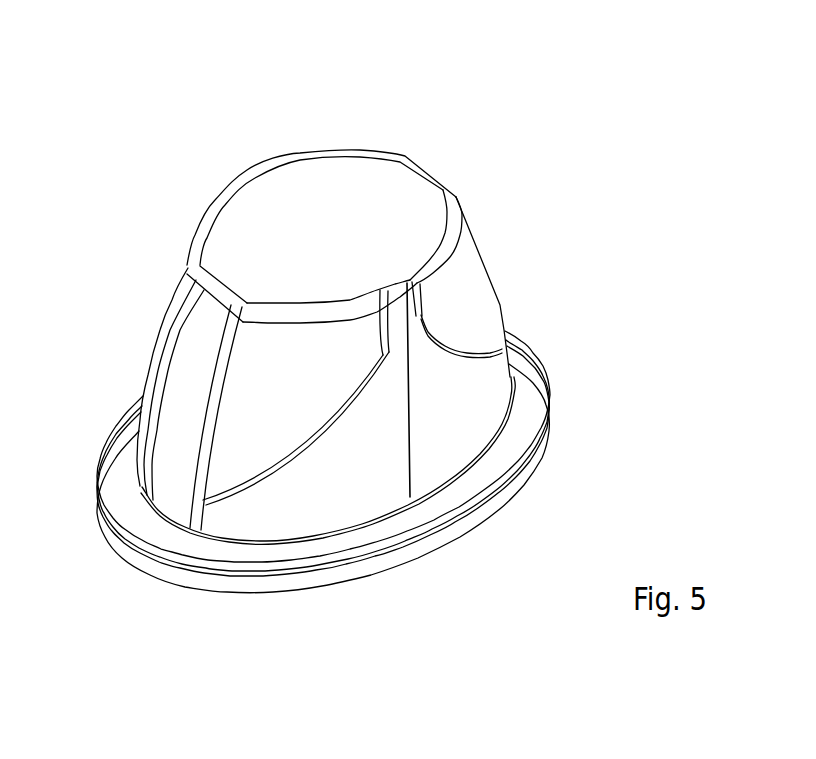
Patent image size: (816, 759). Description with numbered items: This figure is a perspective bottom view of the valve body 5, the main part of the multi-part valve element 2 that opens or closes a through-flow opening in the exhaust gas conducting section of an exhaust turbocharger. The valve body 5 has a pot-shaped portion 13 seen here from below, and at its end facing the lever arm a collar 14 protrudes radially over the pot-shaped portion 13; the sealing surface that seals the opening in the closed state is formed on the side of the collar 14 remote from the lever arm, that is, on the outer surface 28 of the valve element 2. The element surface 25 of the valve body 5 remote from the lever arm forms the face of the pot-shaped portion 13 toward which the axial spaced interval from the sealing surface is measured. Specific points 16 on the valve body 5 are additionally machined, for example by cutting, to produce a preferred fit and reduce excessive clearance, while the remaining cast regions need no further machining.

The valve element 2 is at (628, 188).
The valve body 5 is at (505, 302).
The pot-shaped portion 13 is at (463, 270).
The collar 14 is at (430, 538).
The points 16 is at (553, 392).
The element surface 25 is at (305, 183).
The outer surface 28 is at (157, 330).